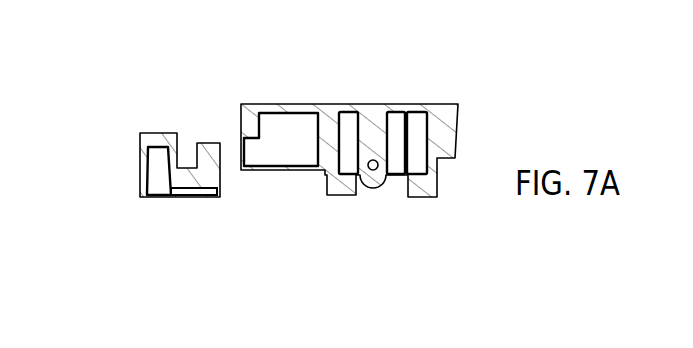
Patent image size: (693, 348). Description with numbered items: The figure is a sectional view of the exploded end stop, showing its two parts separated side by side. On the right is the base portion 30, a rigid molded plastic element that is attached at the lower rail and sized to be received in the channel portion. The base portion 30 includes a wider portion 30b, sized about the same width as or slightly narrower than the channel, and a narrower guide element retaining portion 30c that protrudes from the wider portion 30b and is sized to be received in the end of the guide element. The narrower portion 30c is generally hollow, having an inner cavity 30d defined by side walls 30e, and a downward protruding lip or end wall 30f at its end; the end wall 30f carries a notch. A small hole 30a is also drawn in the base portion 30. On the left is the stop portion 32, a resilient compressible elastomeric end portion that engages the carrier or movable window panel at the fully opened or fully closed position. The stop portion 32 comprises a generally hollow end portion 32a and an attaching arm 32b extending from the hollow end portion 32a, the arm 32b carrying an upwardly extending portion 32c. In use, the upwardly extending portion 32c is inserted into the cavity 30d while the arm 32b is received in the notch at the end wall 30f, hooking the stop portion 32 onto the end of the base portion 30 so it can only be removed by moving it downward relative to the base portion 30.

The base portion 30 is at (332, 123).
The hole 30a is at (375, 170).
The wider portion 30b is at (387, 112).
The narrower guide element retaining portion 30c is at (283, 105).
The inner cavity 30d is at (287, 135).
The side walls 30e is at (257, 167).
The end wall 30f is at (253, 130).
The stop portion 32 is at (158, 157).
The hollow end portion 32a is at (145, 162).
The arm 32b is at (178, 175).
The upwardly extending portion 32c is at (212, 153).